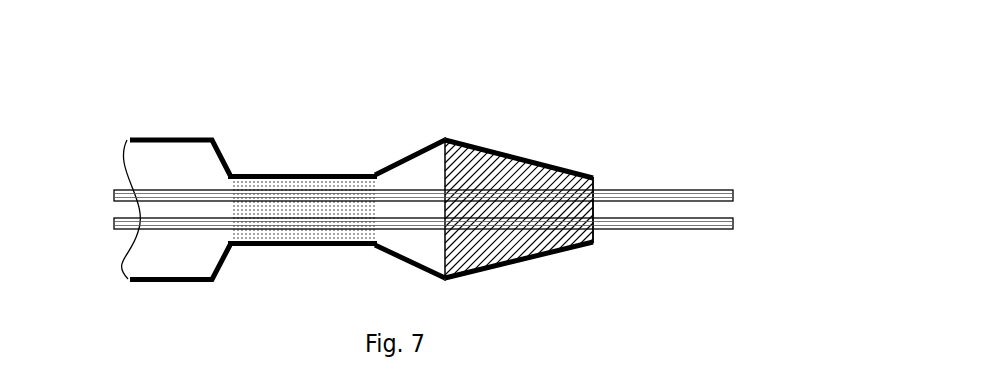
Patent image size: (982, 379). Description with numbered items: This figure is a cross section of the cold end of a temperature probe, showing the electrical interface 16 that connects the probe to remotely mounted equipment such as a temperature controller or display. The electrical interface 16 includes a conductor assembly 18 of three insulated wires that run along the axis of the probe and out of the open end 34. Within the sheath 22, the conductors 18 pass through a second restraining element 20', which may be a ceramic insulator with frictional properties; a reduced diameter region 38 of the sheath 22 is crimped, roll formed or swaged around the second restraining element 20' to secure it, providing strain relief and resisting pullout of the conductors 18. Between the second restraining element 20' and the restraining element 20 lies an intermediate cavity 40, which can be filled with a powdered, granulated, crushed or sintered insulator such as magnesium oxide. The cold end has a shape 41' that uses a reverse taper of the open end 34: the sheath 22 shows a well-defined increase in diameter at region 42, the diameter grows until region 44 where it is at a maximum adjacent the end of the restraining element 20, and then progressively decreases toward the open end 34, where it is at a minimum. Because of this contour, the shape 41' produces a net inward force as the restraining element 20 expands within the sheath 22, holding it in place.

The electrical interface 16 is at (758, 210).
The conductor assembly 18 is at (676, 230).
The restraining element 20 is at (549, 240).
The second restraining element 20' is at (300, 240).
The sheath 22 is at (257, 172).
The open end 34 is at (632, 160).
The reduced diameter region 38 is at (320, 158).
The intermediate cavity 40 is at (410, 250).
The shape 41' is at (551, 129).
The region 42 is at (374, 172).
The region 44 is at (445, 137).